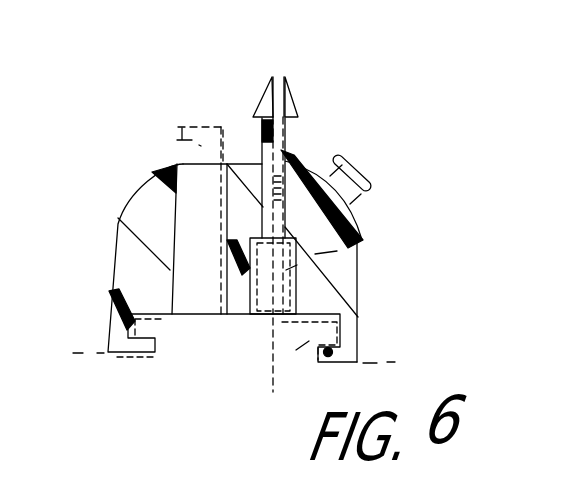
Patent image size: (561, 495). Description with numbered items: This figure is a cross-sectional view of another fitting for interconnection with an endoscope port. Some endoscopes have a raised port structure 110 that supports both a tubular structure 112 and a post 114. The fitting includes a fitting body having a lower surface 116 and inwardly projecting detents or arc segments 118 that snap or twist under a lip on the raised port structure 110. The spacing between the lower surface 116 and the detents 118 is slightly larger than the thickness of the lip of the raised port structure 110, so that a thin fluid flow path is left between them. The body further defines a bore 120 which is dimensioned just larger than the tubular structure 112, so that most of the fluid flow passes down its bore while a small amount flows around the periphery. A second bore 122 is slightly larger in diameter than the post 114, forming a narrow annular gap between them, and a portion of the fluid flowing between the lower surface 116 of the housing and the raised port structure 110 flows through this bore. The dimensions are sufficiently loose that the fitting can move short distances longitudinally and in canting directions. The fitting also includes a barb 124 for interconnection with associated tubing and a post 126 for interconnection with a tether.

The raised port structure 110 is at (362, 309).
The tubular structure 112 is at (382, 237).
The post 114 is at (180, 128).
The lower surface 116 is at (235, 322).
The detents 118 is at (323, 363).
The bore 120 is at (320, 230).
The second bore 122 is at (176, 193).
The barb 124 is at (295, 105).
The post 126 is at (362, 165).